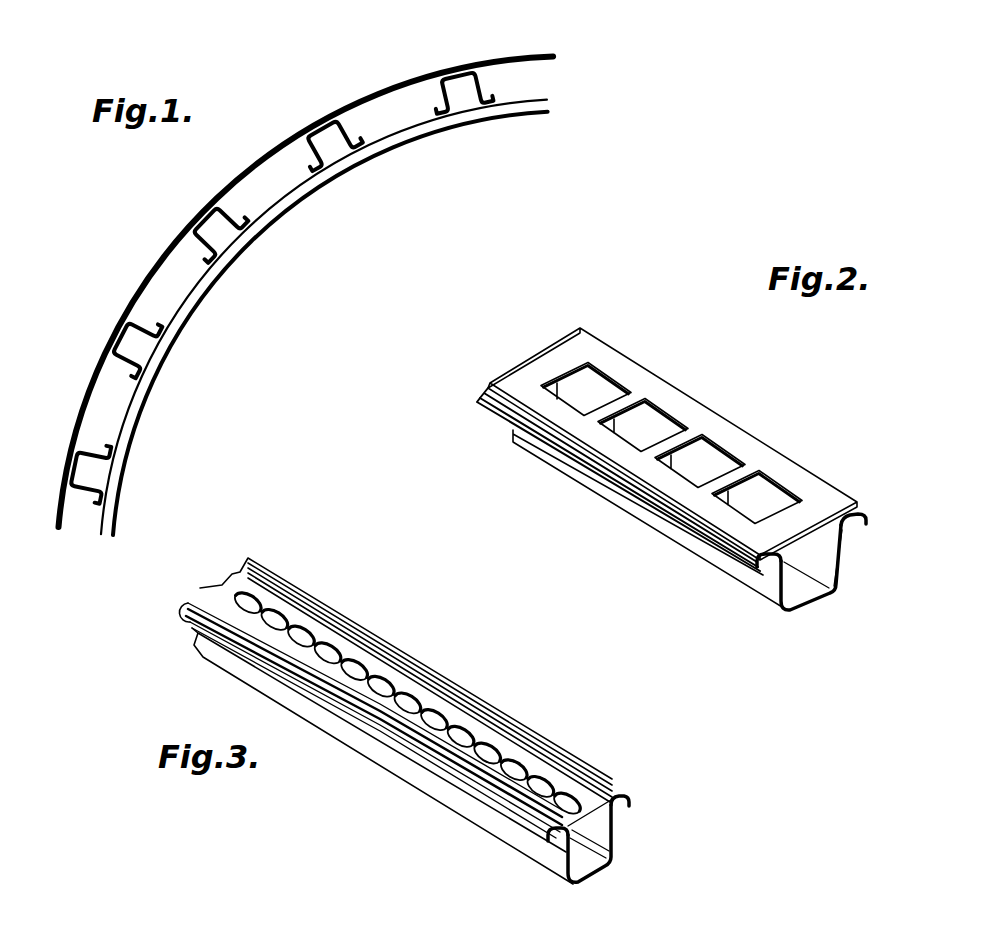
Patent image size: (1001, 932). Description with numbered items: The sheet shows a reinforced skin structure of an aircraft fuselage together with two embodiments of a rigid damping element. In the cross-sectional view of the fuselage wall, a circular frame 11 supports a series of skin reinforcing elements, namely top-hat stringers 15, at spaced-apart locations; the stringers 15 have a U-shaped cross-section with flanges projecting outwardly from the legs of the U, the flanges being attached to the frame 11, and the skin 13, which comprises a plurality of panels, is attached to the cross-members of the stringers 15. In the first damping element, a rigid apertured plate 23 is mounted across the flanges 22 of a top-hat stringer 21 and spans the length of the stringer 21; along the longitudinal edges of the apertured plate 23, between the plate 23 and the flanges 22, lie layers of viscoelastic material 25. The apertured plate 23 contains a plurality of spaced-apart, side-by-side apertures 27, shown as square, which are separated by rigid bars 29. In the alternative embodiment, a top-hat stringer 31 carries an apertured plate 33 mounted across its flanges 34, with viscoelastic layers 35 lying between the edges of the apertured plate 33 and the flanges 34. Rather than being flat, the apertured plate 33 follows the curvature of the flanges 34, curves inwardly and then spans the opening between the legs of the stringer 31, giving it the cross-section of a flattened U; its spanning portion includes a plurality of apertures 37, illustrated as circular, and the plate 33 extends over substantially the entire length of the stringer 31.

In FIG. 1, the frame 11 is at (214, 289).
In FIG. 1, the skin 13 is at (228, 193).
In FIG. 1, the stringers 15 is at (342, 124).
In FIG. 2, the top-hat stringer 21 is at (828, 562).
In FIG. 2, the flanges 22 is at (868, 515).
In FIG. 2, the apertured plate 23 is at (814, 490).
In FIG. 2, the viscoelastic material 25 is at (845, 522).
In FIG. 2, the apertures 27 is at (592, 388).
In FIG. 2, the rigid bars 29 is at (645, 398).
In FIG. 3, the top-hat stringer 31 is at (549, 868).
In FIG. 3, the apertured plate 33 is at (539, 735).
In FIG. 3, the flanges 34 is at (630, 797).
In FIG. 3, the viscoelastic layers 35 is at (624, 808).
In FIG. 3, the apertures 37 is at (360, 664).